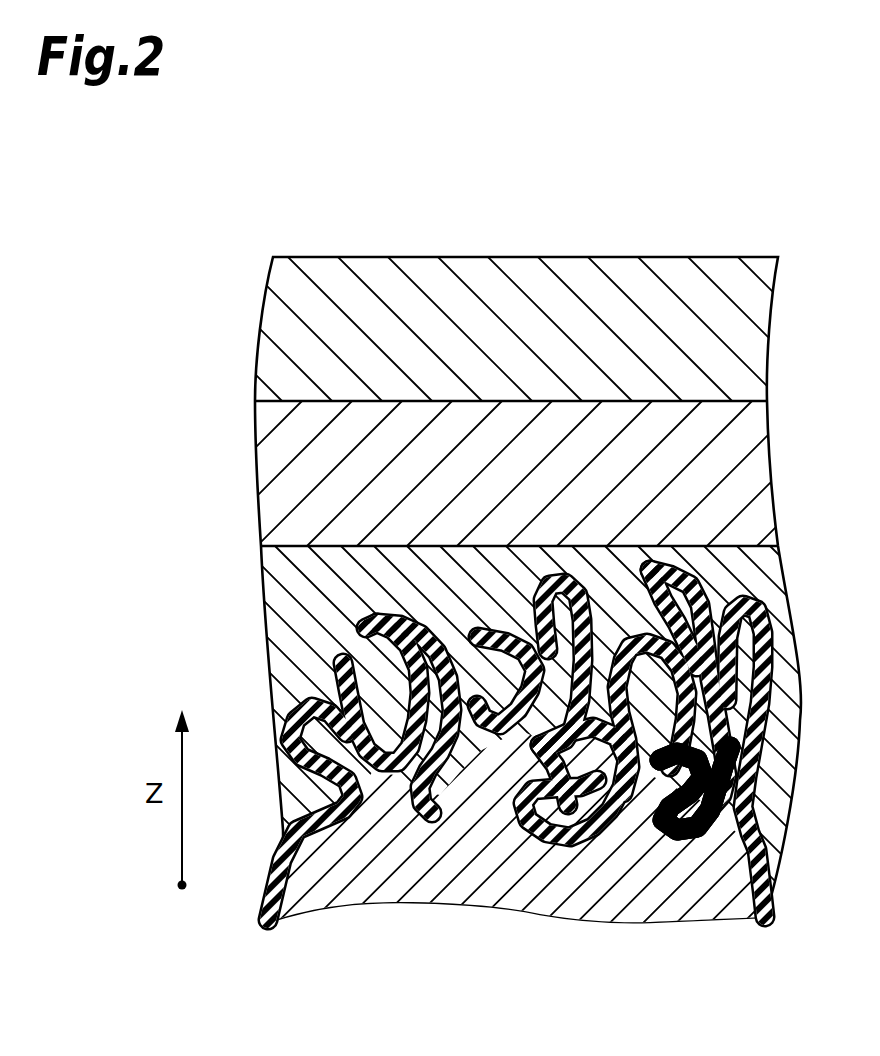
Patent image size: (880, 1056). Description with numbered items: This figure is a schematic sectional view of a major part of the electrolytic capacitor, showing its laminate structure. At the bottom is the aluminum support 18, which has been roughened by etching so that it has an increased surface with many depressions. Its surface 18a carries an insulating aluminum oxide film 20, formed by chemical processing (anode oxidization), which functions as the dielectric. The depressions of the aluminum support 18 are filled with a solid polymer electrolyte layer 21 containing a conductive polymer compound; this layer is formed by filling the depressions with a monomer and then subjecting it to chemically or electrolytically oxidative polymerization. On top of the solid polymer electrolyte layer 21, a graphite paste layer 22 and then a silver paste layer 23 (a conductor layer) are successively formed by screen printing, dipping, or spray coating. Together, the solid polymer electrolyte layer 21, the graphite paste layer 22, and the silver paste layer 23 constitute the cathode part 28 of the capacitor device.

The cathode part 28 is at (126, 285).
The silver paste layer 23 is at (287, 347).
The graphite paste layer 22 is at (275, 488).
The solid polymer electrolyte layer 21 is at (297, 611).
The aluminum support 18 is at (391, 840).
The surface 18a is at (543, 833).
The insulating aluminum oxide film 20 is at (680, 837).